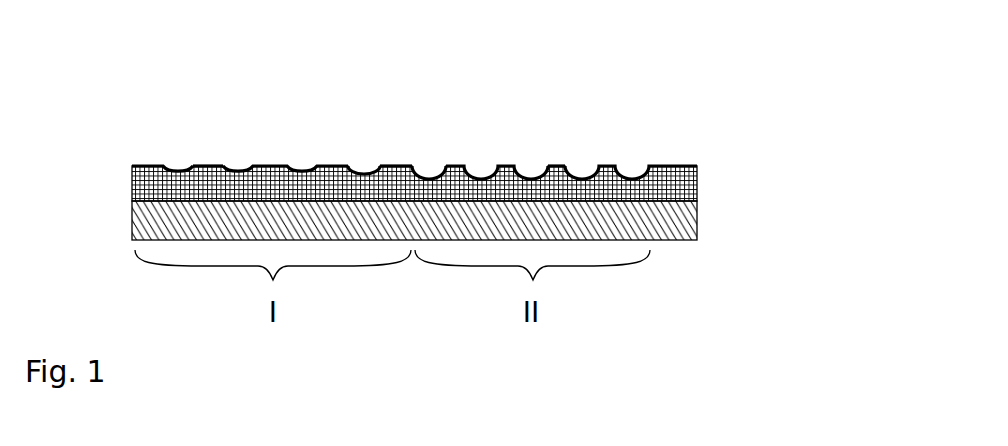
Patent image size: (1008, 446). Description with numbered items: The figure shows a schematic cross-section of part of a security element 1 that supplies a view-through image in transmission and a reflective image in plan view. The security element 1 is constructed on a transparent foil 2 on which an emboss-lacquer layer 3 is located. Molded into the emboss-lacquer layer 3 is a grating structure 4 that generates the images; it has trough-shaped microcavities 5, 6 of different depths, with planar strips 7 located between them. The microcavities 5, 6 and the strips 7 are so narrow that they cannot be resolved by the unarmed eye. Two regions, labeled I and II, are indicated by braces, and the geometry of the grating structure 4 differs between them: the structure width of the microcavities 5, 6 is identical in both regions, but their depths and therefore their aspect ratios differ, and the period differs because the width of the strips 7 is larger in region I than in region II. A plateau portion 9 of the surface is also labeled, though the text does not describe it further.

The security element 1 is at (656, 67).
The transparent foil 2 is at (698, 212).
The emboss-lacquer layer 3 is at (673, 170).
The grating structure 4 is at (494, 116).
The microcavity 5 is at (360, 168).
The microcavity 6 is at (436, 170).
The planar strip 7 is at (563, 166).
The plateau 9 is at (200, 168).